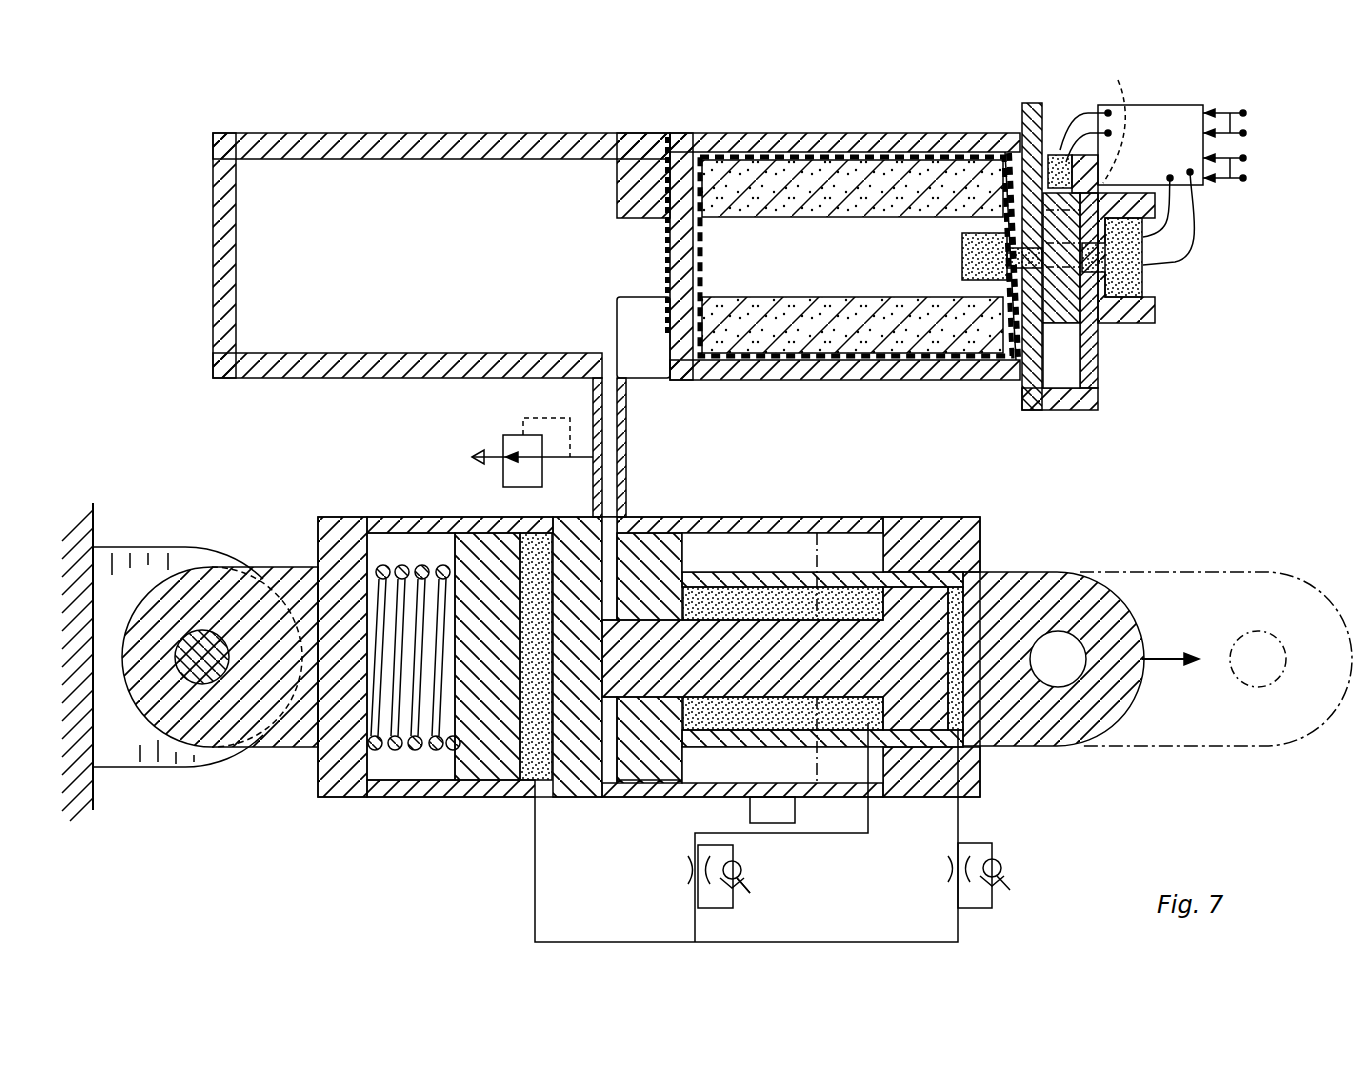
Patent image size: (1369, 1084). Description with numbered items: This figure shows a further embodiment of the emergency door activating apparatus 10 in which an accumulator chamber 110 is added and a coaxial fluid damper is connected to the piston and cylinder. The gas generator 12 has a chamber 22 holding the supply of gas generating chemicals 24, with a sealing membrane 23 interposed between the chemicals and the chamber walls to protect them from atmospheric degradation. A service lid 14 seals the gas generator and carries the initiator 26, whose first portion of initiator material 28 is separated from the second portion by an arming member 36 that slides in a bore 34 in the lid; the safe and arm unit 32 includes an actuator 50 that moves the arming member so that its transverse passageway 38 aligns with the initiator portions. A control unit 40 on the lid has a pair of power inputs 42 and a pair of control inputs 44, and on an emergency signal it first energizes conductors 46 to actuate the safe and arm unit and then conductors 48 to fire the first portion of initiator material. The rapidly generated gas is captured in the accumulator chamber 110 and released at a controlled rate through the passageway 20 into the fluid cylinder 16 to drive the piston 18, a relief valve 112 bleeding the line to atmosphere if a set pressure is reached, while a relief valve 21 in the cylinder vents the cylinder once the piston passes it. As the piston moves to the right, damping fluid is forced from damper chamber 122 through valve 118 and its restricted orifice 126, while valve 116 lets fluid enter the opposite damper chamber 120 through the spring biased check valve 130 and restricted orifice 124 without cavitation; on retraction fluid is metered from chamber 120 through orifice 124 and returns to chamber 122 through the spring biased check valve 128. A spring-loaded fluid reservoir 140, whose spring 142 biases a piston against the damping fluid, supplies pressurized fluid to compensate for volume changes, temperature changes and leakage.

The emergency door activating apparatus 10 is at (1215, 472).
The gas generator 12 is at (858, 406).
The service lid 14 is at (1098, 405).
The fluid cylinder 16 is at (748, 518).
The piston 18 is at (647, 570).
The passageway 20 is at (610, 473).
The relief valve 21 is at (778, 808).
The chamber 22 is at (870, 172).
The sealing membrane 23 is at (777, 155).
The gas generating chemicals 24 is at (812, 332).
The initiator 26 is at (1155, 282).
The first portion of initiator material 28 is at (1125, 310).
The safe and arm unit 32 is at (1092, 350).
The bore 34 is at (1063, 338).
The arming member 36 is at (1033, 290).
The transverse passageway 38 is at (1118, 80).
The control unit 40 is at (1160, 140).
The power inputs 42 is at (1232, 110).
The control inputs 44 is at (1232, 182).
The conductors 46 is at (1090, 105).
The conductors 48 is at (1200, 262).
The actuator 50 is at (664, 262).
The accumulator chamber 110 is at (322, 332).
The relief valve 112 is at (476, 431).
The valve 116 is at (1028, 853).
The valve 118 is at (768, 870).
The damper chamber 120 is at (977, 614).
The damper chamber 122 is at (735, 590).
The restricted orifice 124 is at (953, 880).
The restricted orifice 126 is at (690, 880).
The spring biased check valve 128 is at (750, 893).
The spring biased check valve 130 is at (1002, 874).
The spring-loaded fluid reservoir 140 is at (535, 720).
The spring 142 is at (408, 748).